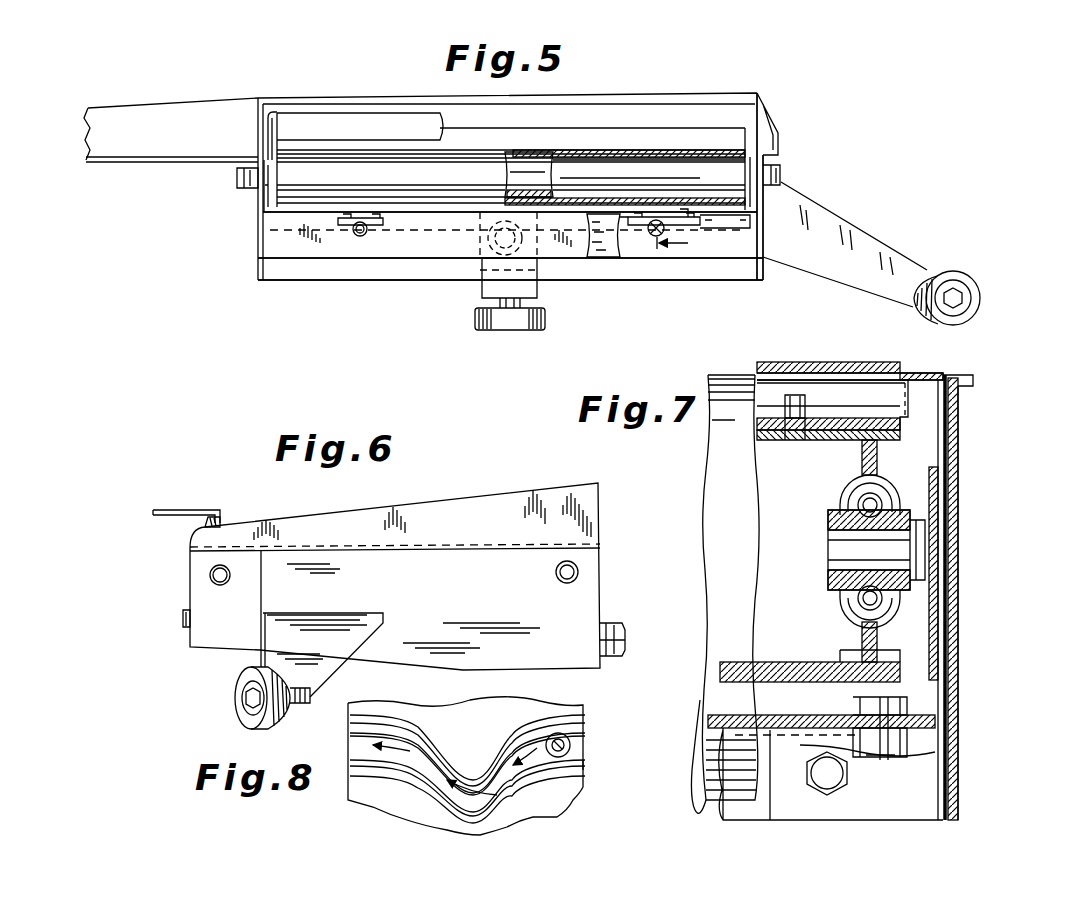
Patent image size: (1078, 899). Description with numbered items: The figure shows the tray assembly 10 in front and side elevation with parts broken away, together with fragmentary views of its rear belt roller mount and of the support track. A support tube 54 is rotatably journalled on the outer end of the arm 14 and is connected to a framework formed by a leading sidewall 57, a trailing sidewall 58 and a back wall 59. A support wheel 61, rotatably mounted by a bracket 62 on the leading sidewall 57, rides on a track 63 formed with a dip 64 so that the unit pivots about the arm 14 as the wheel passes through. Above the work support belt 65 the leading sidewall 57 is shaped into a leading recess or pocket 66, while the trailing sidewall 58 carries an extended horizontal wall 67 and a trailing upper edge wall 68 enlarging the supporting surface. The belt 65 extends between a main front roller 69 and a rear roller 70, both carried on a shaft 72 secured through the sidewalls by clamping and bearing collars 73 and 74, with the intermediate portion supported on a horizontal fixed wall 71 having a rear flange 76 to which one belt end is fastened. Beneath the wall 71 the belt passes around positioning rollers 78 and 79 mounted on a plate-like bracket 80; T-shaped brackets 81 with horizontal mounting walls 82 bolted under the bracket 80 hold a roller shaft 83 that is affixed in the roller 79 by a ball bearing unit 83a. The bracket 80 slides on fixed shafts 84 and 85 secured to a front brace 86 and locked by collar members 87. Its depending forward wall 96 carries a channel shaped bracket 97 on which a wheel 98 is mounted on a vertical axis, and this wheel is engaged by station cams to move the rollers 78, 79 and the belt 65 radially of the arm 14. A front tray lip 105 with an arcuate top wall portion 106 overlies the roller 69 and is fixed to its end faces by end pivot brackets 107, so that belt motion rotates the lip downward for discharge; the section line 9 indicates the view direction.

In FIG. 5, the tray assembly 10 is at (776, 102).
In FIG. 5, the direction arrow 9 is at (679, 244).
In FIG. 6, the arm 14 is at (618, 658).
In FIG. 5, the support tube 54 is at (480, 268).
In FIG. 5, the leading sidewall 57 is at (764, 215).
In FIG. 6, the leading sidewall 57 is at (570, 608).
In FIG. 7, the leading sidewall 57 is at (960, 445).
In FIG. 5, the trailing sidewall 58 is at (258, 262).
In FIG. 5, the back wall 59 is at (731, 93).
In FIG. 5, the support wheel 61 is at (941, 270).
In FIG. 6, the support wheel 61 is at (235, 696).
In FIG. 8, the support wheel 61 is at (572, 745).
In FIG. 5, the bracket 62 is at (865, 242).
In FIG. 6, the bracket 62 is at (372, 618).
In FIG. 8, the track 63 is at (582, 750).
In FIG. 8, the dip 64 is at (459, 762).
In FIG. 5, the work support belt 65 is at (695, 150).
In FIG. 7, the work support belt 65 is at (838, 360).
In FIG. 5, the leading recess or pocket 66 is at (782, 138).
In FIG. 5, the extended horizontal wall 67 is at (212, 157).
In FIG. 5, the trailing upper edge wall 68 is at (188, 102).
In FIG. 5, the main front roller 69 is at (532, 172).
In FIG. 7, the rear roller 70 is at (718, 505).
In FIG. 7, the horizontal fixed wall 71 is at (928, 398).
In FIG. 5, the shaft 72 is at (268, 195).
In FIG. 5, the clamping and bearing collar 73 is at (235, 180).
In FIG. 5, the clamping and bearing collar 74 is at (782, 172).
In FIG. 6, the clamping and bearing collar 74 is at (210, 578).
In FIG. 7, the rear flange 76 is at (866, 415).
In FIG. 5, the positioning roller 78 is at (650, 182).
In FIG. 7, the positioning roller 79 is at (760, 438).
In FIG. 7, the bracket 80 is at (776, 715).
In FIG. 7, the T-shaped bracket 81 is at (928, 466).
In FIG. 7, the horizontal mounting wall 82 is at (846, 715).
In FIG. 7, the roller shaft 83 is at (828, 552).
In FIG. 7, the ball bearing unit 83a is at (842, 602).
In FIG. 5, the fixed shaft 84 is at (358, 240).
In FIG. 5, the fixed shaft 85 is at (652, 237).
In FIG. 5, the front brace 86 is at (568, 248).
In FIG. 7, the front brace 86 is at (726, 760).
In FIG. 5, the collar member 87 is at (352, 238).
In FIG. 5, the depending forward wall 96 is at (604, 258).
In FIG. 5, the channel shaped bracket 97 is at (488, 290).
In FIG. 5, the wheel 98 is at (480, 330).
In FIG. 5, the front tray lip 105 is at (430, 130).
In FIG. 6, the front tray lip 105 is at (222, 516).
In FIG. 5, the arcuate top wall portion 106 is at (386, 113).
In FIG. 6, the arcuate top wall portion 106 is at (182, 508).
In FIG. 5, the end pivot bracket 107 is at (269, 113).